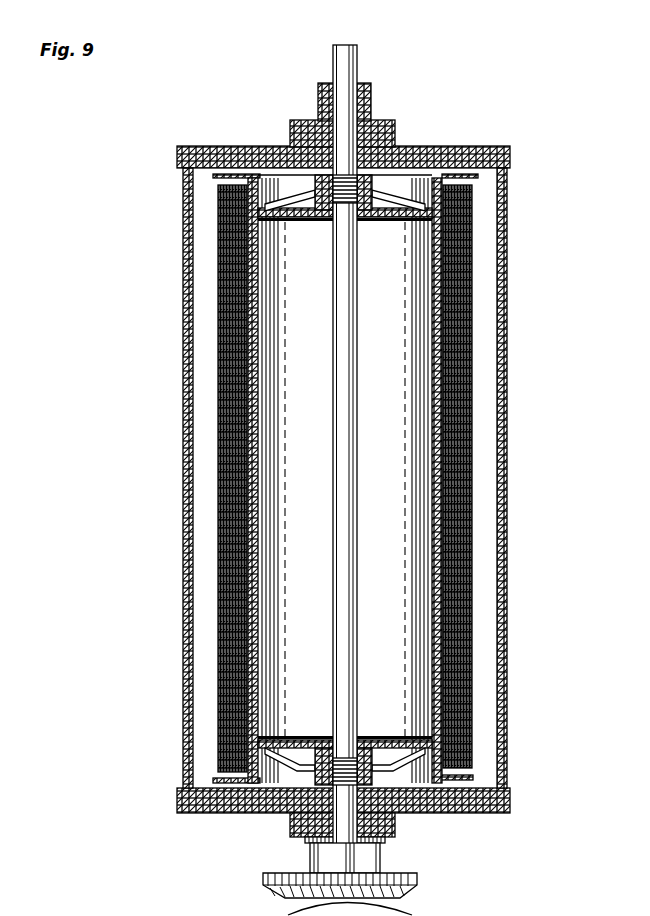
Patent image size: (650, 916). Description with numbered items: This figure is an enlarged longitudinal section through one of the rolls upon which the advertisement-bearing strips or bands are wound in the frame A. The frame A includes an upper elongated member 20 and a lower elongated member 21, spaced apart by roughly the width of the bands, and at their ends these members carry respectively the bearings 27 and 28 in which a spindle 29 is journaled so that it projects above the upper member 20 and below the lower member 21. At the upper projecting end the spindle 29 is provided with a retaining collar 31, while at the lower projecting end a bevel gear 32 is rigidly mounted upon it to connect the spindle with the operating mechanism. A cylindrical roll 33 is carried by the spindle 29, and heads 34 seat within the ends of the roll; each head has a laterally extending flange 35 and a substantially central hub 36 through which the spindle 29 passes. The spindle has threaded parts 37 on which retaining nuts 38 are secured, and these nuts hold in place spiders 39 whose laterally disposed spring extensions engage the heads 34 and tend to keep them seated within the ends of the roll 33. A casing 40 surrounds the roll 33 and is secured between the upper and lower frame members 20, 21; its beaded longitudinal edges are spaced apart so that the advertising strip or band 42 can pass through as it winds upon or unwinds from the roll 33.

The frame A is at (221, 132).
The upper elongated member 20 is at (479, 147).
The lower elongated member 21 is at (462, 805).
The bearing 27 is at (376, 123).
The bearing 28 is at (332, 832).
The spindle 29 is at (346, 434).
The retaining collar 31 is at (364, 84).
The bevel gear 32 is at (327, 861).
The cylindrical roll 33 is at (247, 466).
The head 34 is at (402, 219).
The laterally extending flange 35 is at (478, 176).
The hub 36 is at (314, 217).
The threaded part 37 is at (368, 173).
The retaining nut 38 is at (322, 178).
The spider 39 is at (287, 213).
The casing 40 is at (507, 293).
The advertising strip or band 42 is at (464, 700).